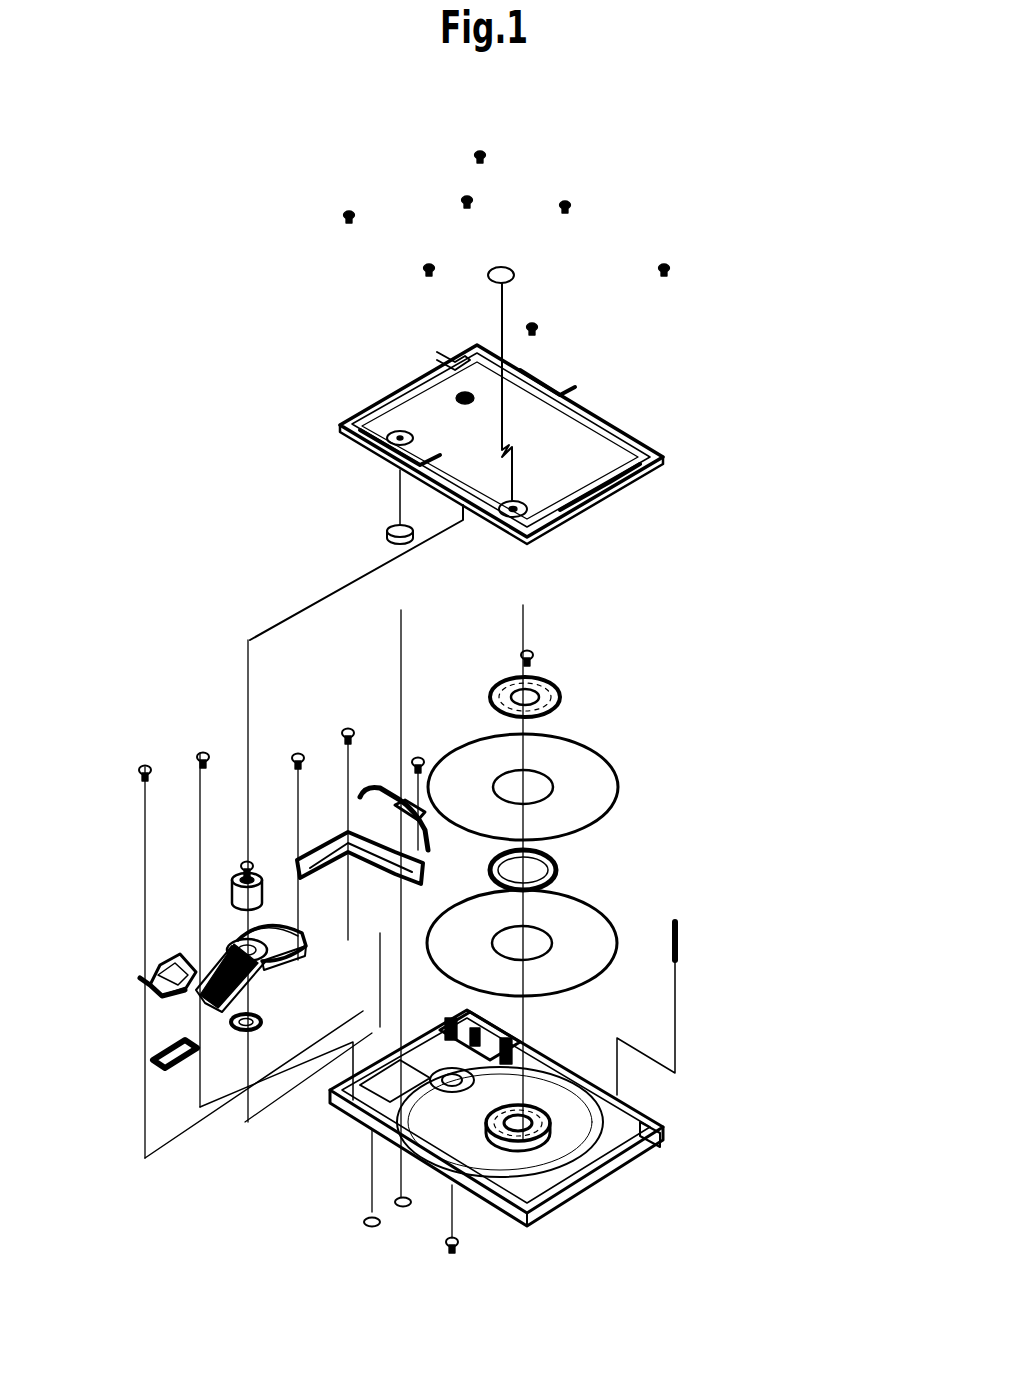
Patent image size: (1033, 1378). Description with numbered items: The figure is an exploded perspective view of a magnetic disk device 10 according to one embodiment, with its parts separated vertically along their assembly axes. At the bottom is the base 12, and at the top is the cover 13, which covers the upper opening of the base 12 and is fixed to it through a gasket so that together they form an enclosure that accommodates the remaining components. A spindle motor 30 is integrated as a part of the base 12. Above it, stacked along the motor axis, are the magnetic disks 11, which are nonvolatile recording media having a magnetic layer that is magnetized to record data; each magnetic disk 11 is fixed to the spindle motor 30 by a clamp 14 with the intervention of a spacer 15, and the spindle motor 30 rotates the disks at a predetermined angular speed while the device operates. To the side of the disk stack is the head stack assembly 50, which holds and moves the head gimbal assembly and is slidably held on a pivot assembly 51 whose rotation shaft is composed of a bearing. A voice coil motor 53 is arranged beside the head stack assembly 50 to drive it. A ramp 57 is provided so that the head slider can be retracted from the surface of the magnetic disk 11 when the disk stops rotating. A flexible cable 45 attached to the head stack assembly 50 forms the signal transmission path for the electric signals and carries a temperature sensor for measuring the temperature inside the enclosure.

The magnetic disk device 10 is at (318, 351).
The magnetic disk 11 is at (585, 750).
The base 12 is at (663, 1127).
The cover 13 is at (658, 443).
The clamp 14 is at (557, 683).
The spacer 15 is at (557, 873).
The spindle motor 30 is at (535, 1140).
The flexible cable 45 is at (166, 957).
The head stack assembly 50 is at (252, 970).
The pivot assembly 51 is at (240, 872).
The voice coil motor 53 is at (343, 845).
The ramp 57 is at (263, 1035).